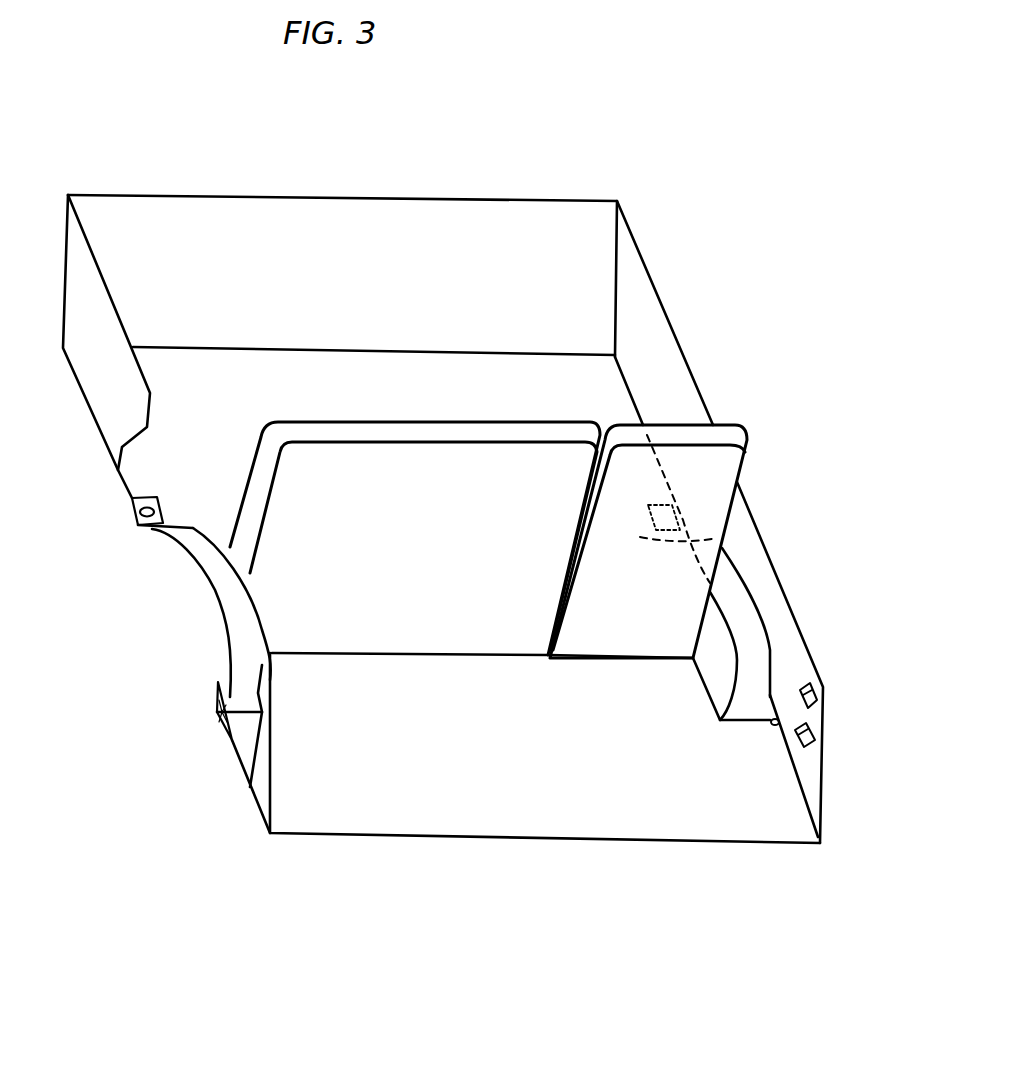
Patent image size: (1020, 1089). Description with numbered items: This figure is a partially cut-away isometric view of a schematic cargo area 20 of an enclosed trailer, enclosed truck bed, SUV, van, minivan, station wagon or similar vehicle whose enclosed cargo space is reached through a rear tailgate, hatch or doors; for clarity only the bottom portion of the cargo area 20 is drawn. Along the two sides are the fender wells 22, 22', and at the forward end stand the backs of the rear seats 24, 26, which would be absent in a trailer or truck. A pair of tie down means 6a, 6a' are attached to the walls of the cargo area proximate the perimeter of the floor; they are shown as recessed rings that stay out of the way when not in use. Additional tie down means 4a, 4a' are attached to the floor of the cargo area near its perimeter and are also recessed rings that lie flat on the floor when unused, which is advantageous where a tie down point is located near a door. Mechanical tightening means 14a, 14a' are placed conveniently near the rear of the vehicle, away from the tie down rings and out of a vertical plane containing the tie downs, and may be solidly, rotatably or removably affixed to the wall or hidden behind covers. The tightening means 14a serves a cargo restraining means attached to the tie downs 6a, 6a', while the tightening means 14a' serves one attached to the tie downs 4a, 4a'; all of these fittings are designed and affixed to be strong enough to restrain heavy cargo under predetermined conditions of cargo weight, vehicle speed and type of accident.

The cargo area 20 is at (449, 197).
The fender well 22 is at (796, 662).
The fender well 22' is at (180, 679).
The rear seat back 24 is at (685, 418).
The rear seat back 26 is at (565, 418).
The tie down means 4a is at (742, 506).
The tie down means 4a' is at (95, 539).
The tie down means 6a is at (779, 823).
The tie down means 6a' is at (181, 795).
The mechanical tightening means 14a is at (850, 777).
The mechanical tightening means 14a' is at (854, 649).